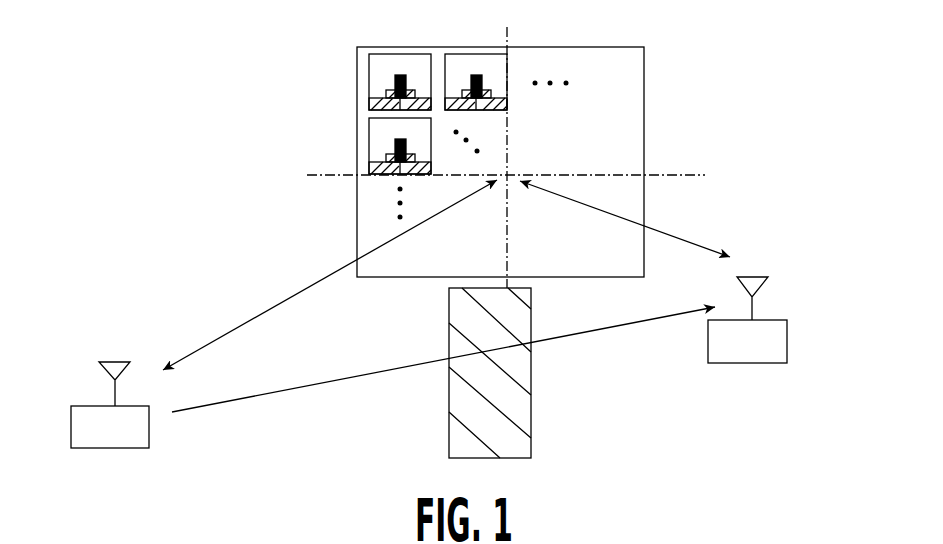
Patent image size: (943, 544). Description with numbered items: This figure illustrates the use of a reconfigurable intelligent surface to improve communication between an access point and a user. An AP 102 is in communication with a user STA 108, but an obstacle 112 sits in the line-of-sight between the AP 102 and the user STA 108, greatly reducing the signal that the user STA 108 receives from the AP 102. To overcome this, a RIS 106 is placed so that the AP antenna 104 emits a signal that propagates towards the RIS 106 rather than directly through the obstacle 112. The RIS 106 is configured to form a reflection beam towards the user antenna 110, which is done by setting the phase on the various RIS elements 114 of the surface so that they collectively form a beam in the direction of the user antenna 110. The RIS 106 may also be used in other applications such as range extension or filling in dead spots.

The AP 102 is at (92, 406).
The AP antenna 104 is at (116, 362).
The RIS 106 is at (630, 47).
The user STA 108 is at (787, 340).
The user antenna 110 is at (758, 277).
The obstacle 112 is at (449, 330).
The RIS elements 114 is at (369, 75).